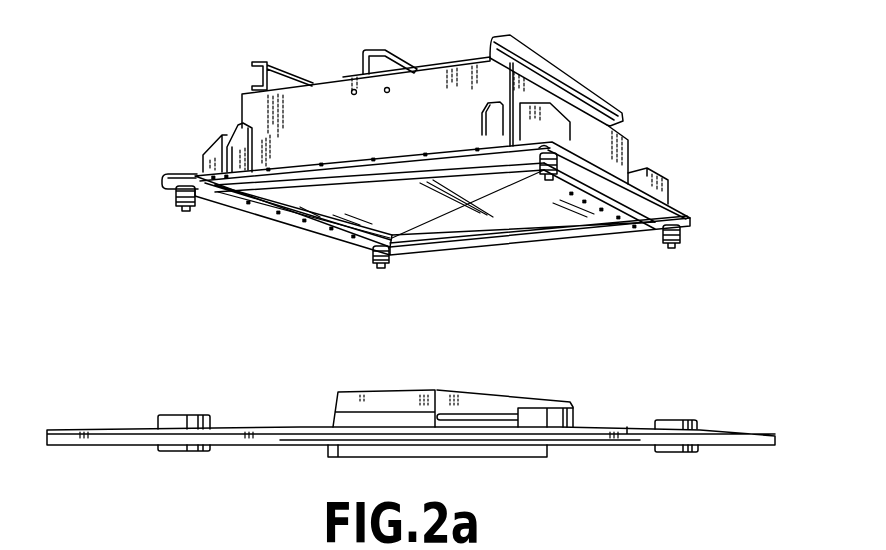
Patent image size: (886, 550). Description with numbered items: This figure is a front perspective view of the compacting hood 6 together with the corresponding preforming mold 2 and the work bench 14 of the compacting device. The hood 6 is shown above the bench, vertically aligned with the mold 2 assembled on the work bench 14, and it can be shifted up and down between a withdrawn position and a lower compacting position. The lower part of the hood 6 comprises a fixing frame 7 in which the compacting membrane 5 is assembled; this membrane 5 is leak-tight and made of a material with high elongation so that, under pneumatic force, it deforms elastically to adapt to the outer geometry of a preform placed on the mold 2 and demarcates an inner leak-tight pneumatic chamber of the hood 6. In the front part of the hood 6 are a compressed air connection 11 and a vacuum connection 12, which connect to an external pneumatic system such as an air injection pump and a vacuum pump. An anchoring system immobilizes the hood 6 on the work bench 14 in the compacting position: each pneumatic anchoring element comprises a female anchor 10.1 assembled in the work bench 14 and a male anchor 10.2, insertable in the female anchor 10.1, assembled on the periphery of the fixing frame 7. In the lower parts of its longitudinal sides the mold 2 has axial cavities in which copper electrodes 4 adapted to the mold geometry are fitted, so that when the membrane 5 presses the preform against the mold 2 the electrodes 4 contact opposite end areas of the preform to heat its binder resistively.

The preforming mold 2 is at (397, 391).
The copper electrodes 4 is at (472, 416).
The compacting membrane 5 is at (517, 208).
The compacting hood 6 is at (645, 138).
The fixing frame 7 is at (601, 240).
The female anchor 10.1 is at (175, 418).
The male anchor 10.2 is at (177, 205).
The compressed air connection 11 is at (353, 90).
The vacuum connection 12 is at (389, 88).
The work bench 14 is at (733, 435).